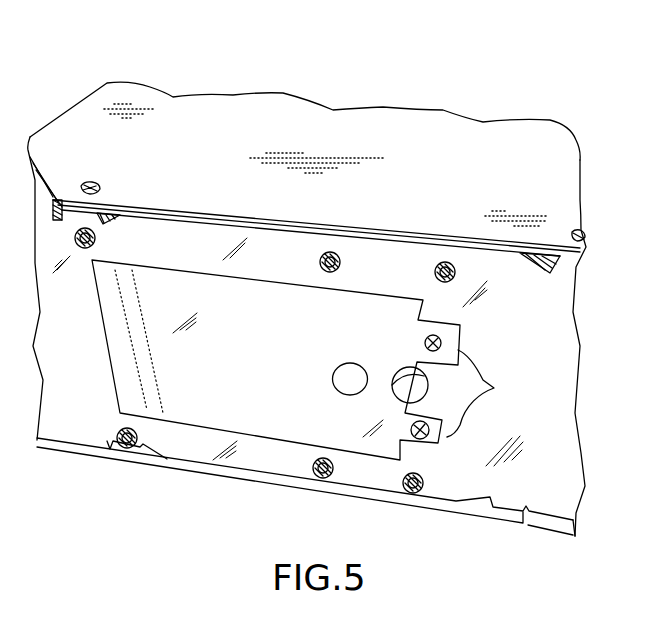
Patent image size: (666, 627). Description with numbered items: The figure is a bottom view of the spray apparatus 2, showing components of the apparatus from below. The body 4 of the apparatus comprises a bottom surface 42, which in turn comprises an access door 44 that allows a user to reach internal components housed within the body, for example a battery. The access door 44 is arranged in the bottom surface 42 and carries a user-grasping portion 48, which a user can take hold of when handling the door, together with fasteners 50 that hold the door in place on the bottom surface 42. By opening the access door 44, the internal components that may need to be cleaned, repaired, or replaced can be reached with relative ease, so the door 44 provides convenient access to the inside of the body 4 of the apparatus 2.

The apparatus 2 is at (552, 81).
The body 4 is at (433, 128).
The bottom surface 42 is at (545, 355).
The access door 44 is at (217, 411).
The user-grasping portion 48 is at (347, 375).
The fasteners 50 is at (494, 389).